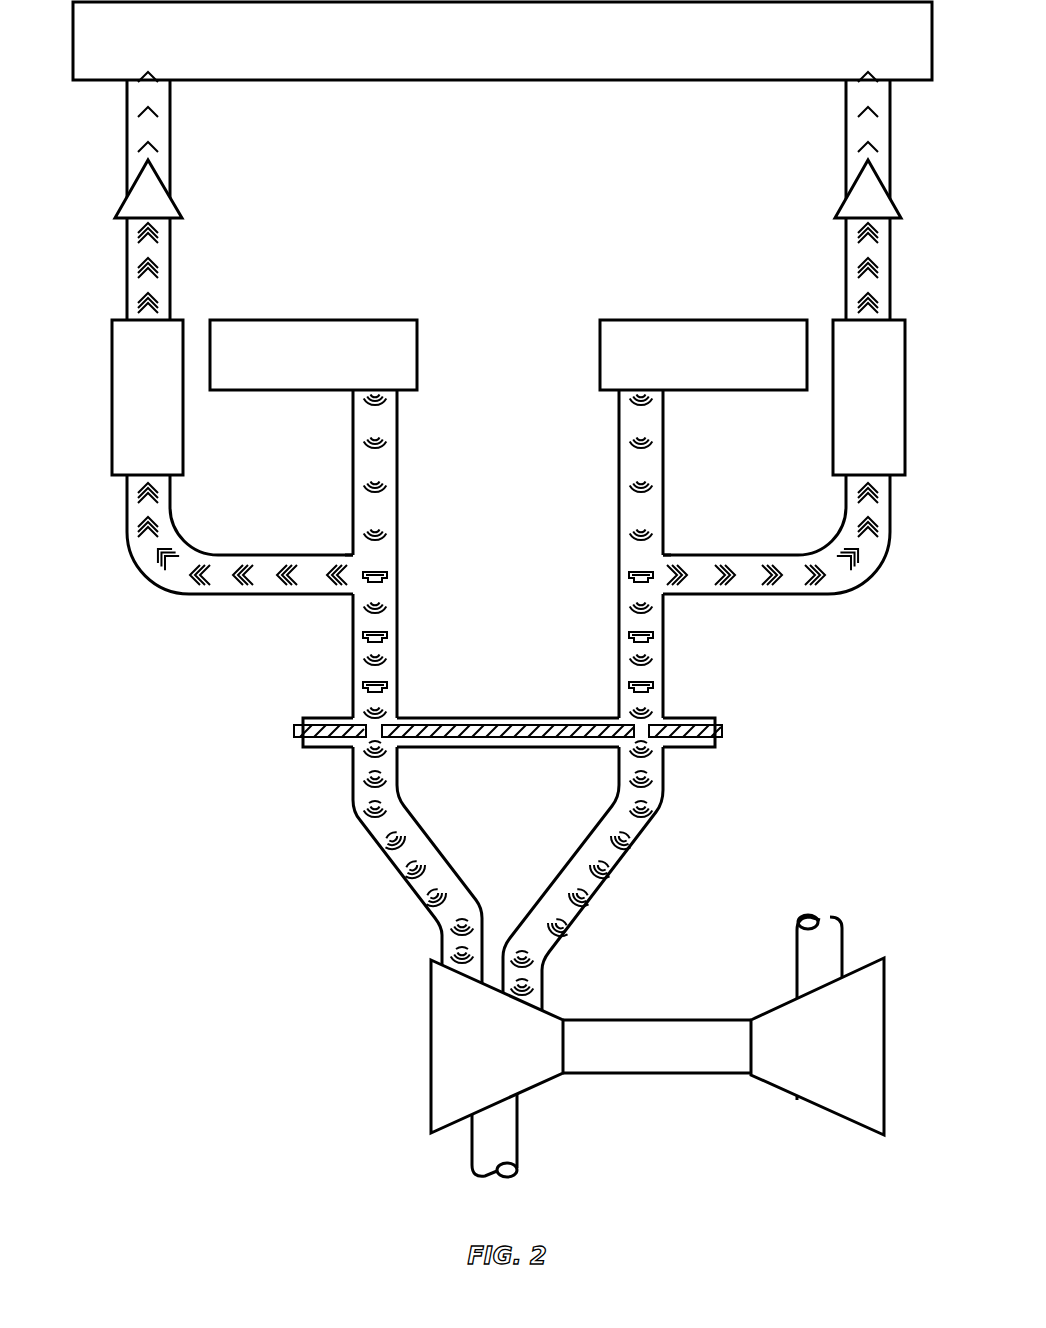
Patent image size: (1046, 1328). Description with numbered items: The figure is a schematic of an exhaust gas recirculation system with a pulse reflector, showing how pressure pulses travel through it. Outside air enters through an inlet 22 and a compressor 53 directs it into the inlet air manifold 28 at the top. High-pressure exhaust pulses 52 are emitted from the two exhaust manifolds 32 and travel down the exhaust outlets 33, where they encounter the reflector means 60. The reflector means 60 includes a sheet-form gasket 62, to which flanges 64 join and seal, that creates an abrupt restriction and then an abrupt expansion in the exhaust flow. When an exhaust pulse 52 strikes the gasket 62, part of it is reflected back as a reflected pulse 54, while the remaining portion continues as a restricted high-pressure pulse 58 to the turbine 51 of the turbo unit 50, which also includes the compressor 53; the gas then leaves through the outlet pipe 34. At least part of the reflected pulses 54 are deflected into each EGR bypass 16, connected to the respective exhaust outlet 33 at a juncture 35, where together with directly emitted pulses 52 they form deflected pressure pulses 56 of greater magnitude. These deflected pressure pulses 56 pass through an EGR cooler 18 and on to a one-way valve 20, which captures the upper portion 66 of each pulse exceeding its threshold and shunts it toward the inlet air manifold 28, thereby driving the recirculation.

The EGR bypass 16 is at (258, 605).
The EGR cooler 18 is at (508, 397).
The one-way valve 20 is at (150, 185).
The inlet 22 is at (817, 1127).
The inlet air manifold 28 is at (502, 41).
The exhaust manifold 32 is at (508, 355).
The exhaust outlet 33 is at (404, 500).
The outlet pipe 34 is at (505, 1125).
The juncture 35 is at (343, 545).
The turbo unit 50 is at (657, 1046).
The turbine 51 is at (497, 1046).
The high-pressure exhaust pulses 52 is at (365, 405).
The compressor 53 is at (817, 1046).
The reflected pulse 54 is at (385, 642).
The deflected pressure pulses 56 is at (155, 265).
The restricted high-pressure pulse 58 is at (378, 815).
The reflector means 60 is at (530, 728).
The gasket 62 is at (722, 733).
The flanges 64 is at (325, 716).
The upper portion of the deflected pulse 66 is at (160, 78).